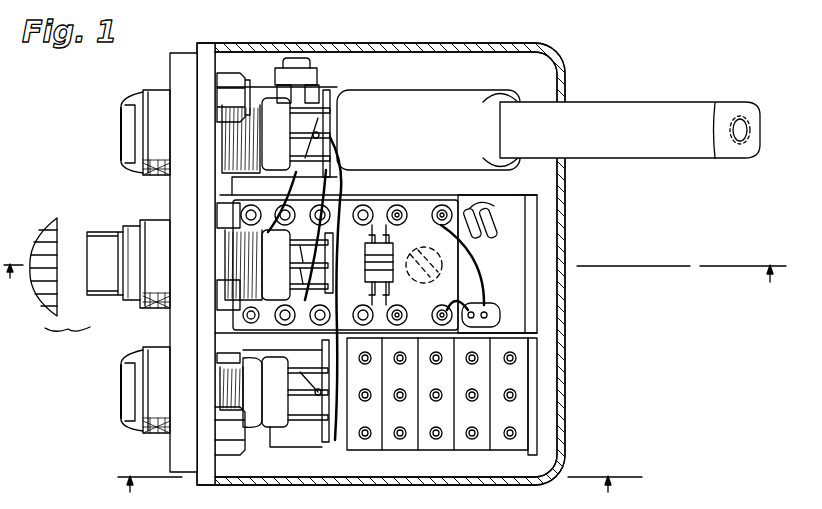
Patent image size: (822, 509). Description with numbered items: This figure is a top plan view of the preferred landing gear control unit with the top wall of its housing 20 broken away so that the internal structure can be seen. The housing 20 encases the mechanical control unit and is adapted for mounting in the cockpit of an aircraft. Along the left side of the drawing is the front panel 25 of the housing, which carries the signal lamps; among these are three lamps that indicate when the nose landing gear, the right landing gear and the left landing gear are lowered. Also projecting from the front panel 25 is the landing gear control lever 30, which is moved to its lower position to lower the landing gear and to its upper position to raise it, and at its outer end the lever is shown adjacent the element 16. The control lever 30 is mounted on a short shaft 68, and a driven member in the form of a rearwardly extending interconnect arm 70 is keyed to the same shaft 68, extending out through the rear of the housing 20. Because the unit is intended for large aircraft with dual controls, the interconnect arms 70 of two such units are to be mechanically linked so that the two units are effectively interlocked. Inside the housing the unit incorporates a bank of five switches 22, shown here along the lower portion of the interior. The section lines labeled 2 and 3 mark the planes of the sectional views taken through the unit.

The housing 20 is at (563, 54).
The front panel 25 is at (182, 318).
The landing gear control lever 30 is at (103, 230).
The cap 16 is at (40, 240).
The interconnect arm 70 is at (663, 103).
The shaft 68 is at (297, 58).
The switches 22 is at (400, 455).
The section line 2- 2 is at (394, 284).
The section line 3- 3 is at (368, 482).